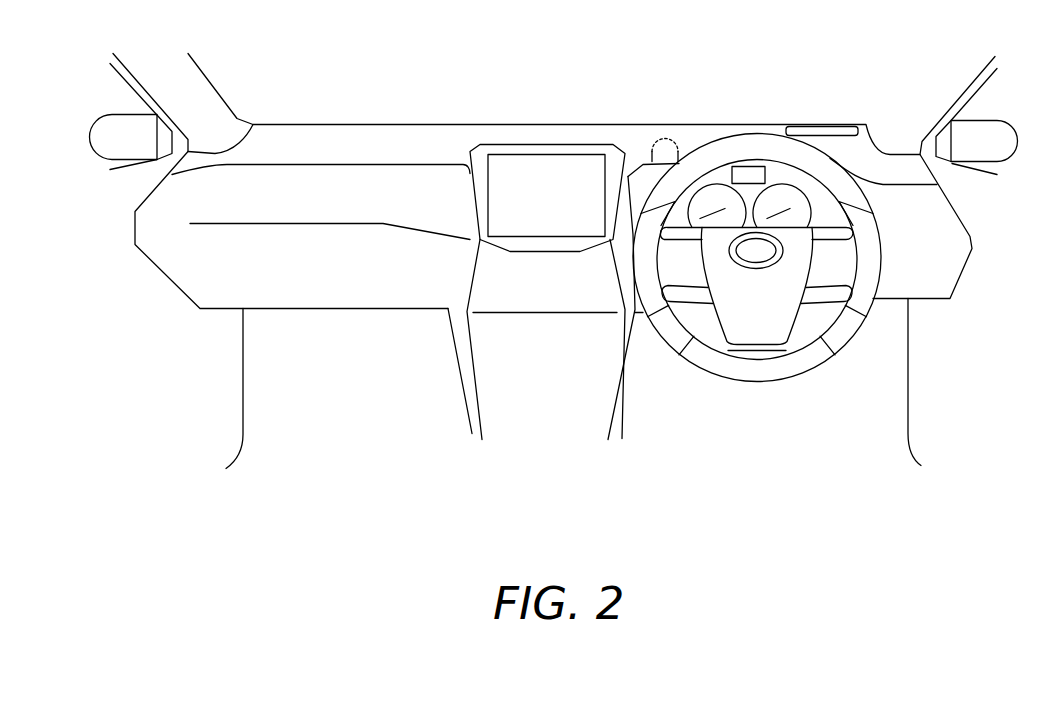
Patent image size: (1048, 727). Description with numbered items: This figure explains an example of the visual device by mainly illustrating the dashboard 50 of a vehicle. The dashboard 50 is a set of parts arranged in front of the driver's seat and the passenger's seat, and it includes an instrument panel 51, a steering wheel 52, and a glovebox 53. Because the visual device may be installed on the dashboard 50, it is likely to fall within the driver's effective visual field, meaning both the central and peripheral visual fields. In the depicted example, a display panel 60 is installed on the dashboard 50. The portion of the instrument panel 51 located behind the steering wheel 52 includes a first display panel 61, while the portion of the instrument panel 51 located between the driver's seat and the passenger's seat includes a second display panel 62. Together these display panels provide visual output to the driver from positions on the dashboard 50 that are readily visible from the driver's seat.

The dashboard 50 is at (519, 113).
The instrument panel 51 is at (757, 223).
The steering wheel 52 is at (757, 319).
The glovebox 53 is at (333, 278).
The display panel 60 is at (705, 53).
The first display panel 61 is at (748, 170).
The second display panel 62 is at (563, 163).